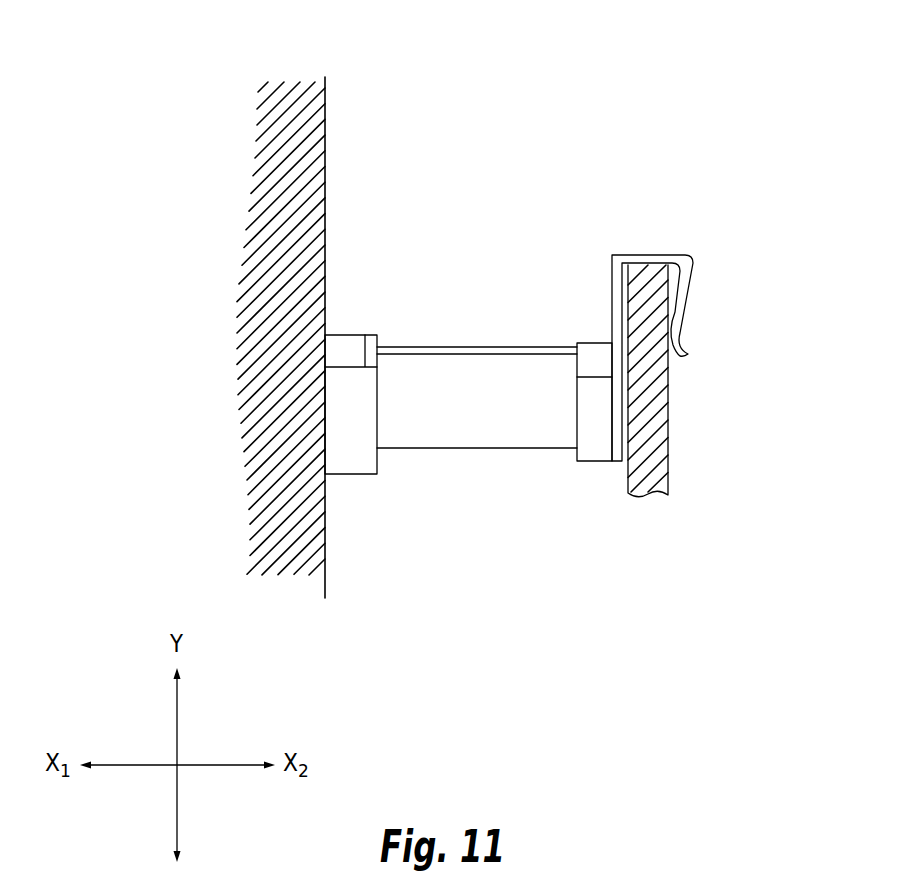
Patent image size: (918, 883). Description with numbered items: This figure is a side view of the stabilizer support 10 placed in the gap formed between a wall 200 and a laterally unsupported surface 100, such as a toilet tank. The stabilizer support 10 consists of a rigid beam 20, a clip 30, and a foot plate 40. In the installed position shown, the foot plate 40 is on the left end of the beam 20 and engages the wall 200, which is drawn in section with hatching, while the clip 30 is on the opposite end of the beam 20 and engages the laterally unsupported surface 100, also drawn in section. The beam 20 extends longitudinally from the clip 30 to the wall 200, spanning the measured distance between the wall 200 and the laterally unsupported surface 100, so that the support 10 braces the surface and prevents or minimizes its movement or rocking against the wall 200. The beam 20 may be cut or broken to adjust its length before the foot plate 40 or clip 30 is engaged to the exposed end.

The stabilizer support 10 is at (520, 110).
The rigid beam 20 is at (457, 448).
The clip 30 is at (647, 260).
The foot plate 40 is at (347, 474).
The laterally unsupported surface 100 is at (668, 473).
The wall 200 is at (325, 100).